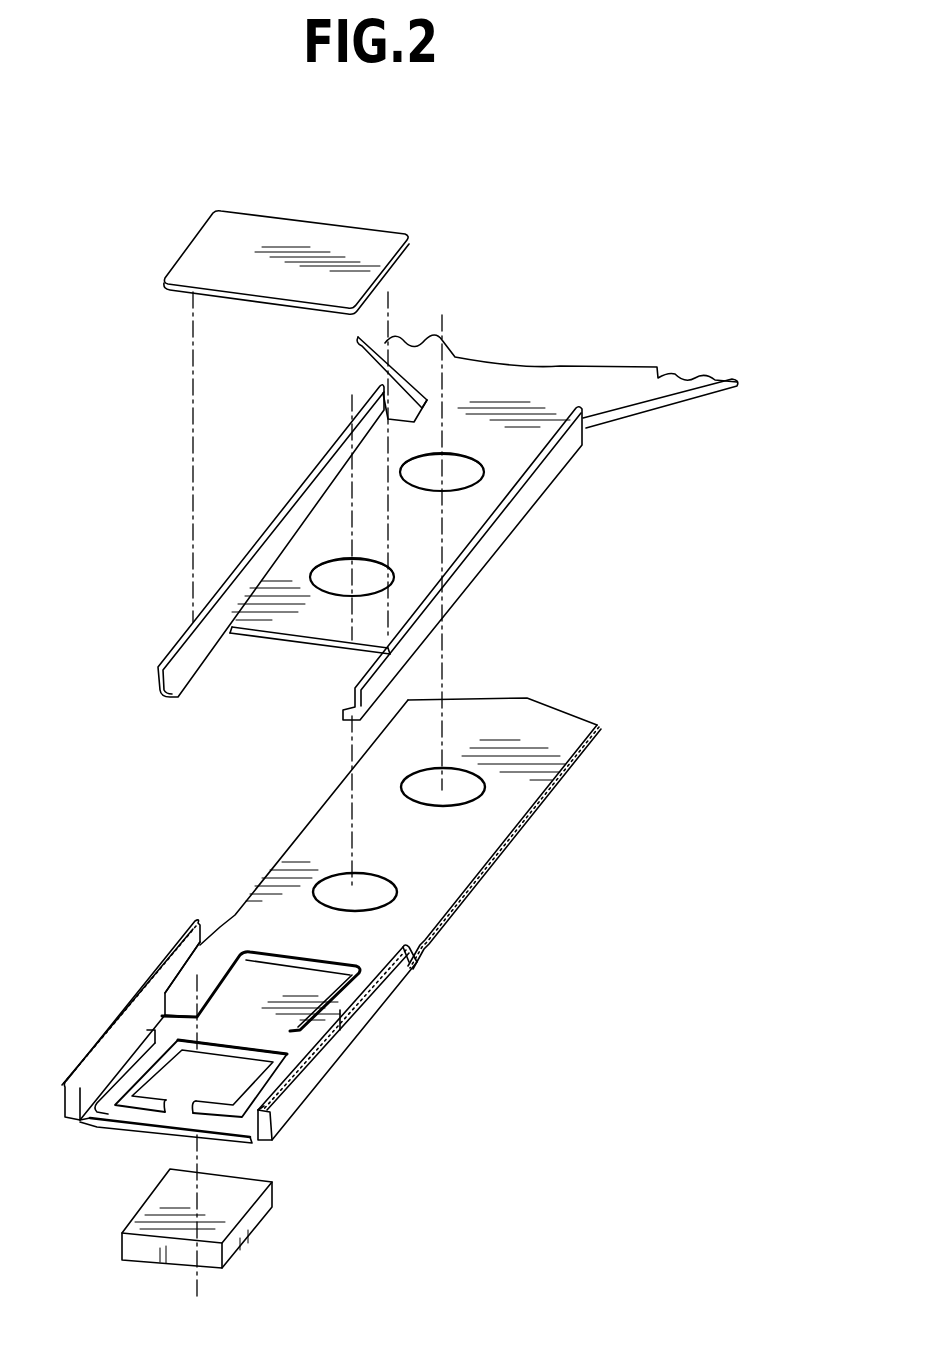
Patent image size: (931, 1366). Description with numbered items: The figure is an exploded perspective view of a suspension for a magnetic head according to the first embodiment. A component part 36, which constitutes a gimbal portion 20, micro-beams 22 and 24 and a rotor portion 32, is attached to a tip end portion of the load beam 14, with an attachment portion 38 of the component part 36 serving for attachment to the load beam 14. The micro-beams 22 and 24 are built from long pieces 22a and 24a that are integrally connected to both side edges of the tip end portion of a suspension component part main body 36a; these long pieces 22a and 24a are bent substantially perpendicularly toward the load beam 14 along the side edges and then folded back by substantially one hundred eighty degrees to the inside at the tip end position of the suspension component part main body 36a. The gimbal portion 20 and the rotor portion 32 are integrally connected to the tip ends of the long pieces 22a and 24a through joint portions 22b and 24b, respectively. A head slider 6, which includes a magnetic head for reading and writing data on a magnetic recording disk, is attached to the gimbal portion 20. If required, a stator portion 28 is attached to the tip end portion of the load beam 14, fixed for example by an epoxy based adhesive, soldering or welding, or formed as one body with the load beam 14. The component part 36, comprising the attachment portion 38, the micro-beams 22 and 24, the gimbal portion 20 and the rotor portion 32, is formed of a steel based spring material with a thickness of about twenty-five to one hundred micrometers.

The stator portion 28 is at (213, 252).
The load beam 14 is at (513, 510).
The attachment portion 38 is at (512, 717).
The component part 36 is at (320, 911).
The suspension component part main body 36a is at (443, 880).
The micro-beam 22 is at (120, 1007).
The long piece 22a is at (183, 942).
The joint portion 22b is at (160, 1022).
The rotor portion 32 is at (273, 988).
The micro-beam 24 is at (360, 1046).
The long piece 24a is at (335, 1046).
The joint portion 24b is at (312, 1045).
The gimbal portion 20 is at (193, 1092).
The head slider 6 is at (257, 1232).